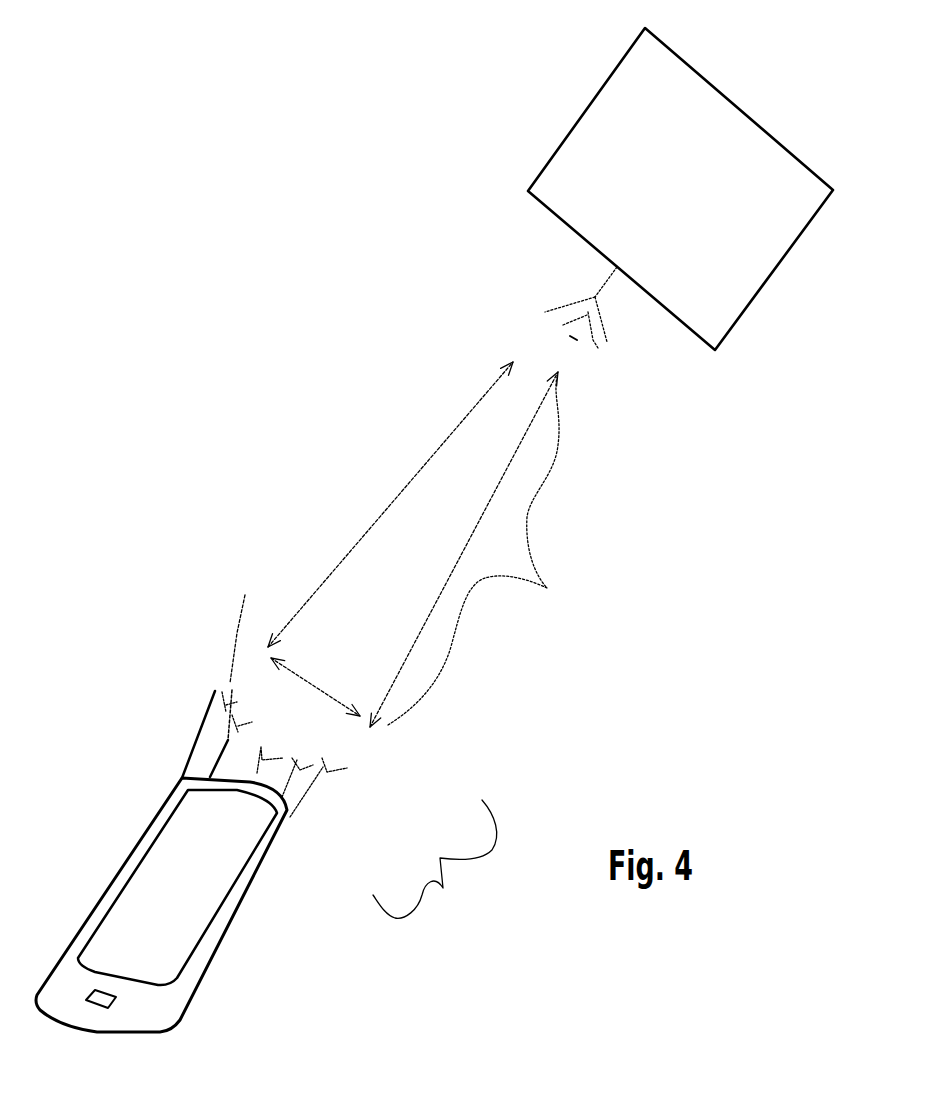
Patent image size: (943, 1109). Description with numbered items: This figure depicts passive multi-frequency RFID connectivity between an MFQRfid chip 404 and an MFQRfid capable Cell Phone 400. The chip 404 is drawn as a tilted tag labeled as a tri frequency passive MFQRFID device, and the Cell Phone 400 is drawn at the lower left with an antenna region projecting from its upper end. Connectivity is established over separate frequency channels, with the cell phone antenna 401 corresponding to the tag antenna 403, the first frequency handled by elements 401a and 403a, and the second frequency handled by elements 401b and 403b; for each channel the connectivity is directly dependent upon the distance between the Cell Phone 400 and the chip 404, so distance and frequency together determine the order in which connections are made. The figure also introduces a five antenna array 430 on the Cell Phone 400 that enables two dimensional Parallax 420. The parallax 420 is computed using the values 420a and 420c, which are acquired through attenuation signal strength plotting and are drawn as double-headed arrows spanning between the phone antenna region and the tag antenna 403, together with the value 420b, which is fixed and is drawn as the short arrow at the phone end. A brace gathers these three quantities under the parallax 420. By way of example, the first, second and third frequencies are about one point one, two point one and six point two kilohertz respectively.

The MFQRfid capable Cell Phone 400 is at (220, 940).
The frequency channel antenna 401 is at (212, 680).
The first frequency channel element 401a is at (343, 763).
The second frequency channel element 401b is at (255, 614).
The frequency channel antenna 403 is at (545, 312).
The first frequency channel element 403a is at (593, 340).
The second frequency channel element 403b is at (577, 340).
The MFQRfid chip 404 is at (752, 308).
The two dimensional Parallax 420 is at (486, 551).
The parallax value 420a is at (464, 549).
The fixed parallax value 420b is at (319, 682).
The parallax value 420c is at (390, 504).
The five antenna array 430 is at (435, 863).